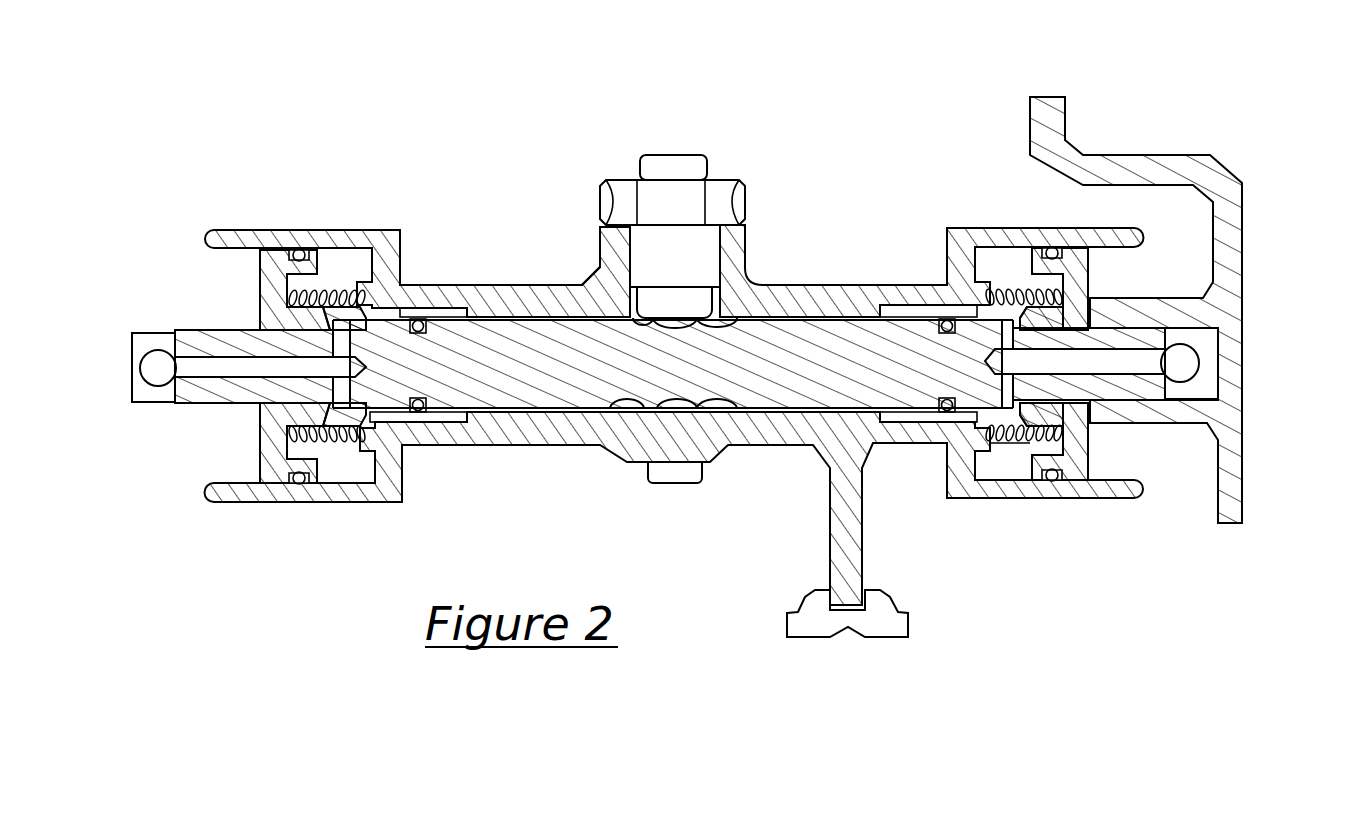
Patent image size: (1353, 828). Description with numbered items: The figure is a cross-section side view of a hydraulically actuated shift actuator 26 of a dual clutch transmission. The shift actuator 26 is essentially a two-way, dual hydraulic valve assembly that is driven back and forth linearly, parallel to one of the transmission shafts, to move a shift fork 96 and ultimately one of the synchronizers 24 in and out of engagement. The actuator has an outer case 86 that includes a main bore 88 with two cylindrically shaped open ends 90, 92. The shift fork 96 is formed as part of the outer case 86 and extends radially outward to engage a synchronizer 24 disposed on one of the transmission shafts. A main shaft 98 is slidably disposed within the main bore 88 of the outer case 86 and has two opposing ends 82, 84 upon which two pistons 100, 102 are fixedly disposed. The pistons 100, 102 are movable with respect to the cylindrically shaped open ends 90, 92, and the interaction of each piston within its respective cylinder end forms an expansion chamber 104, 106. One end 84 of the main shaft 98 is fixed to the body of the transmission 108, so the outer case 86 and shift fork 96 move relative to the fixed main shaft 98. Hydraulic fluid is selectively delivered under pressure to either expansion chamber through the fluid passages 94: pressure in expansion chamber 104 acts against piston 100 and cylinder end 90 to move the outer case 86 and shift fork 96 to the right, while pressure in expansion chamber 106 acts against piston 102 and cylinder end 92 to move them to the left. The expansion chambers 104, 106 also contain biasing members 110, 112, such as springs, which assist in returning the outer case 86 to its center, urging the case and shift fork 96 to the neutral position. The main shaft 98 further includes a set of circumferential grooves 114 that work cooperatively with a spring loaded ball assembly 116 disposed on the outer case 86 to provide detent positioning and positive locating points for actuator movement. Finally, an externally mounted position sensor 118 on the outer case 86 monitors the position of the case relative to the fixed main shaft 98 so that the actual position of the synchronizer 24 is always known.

The synchronizer 24 is at (897, 616).
The shift actuator 26 is at (486, 209).
The end of main shaft 82 is at (247, 398).
The end of main shaft 84 is at (1133, 392).
The outer case 86 is at (578, 445).
The main bore 88 is at (774, 409).
The cylindrically shaped open end 90 is at (247, 483).
The cylindrically shaped open end 92 is at (1138, 468).
The fluid passages 94 is at (157, 370).
The shift fork 96 is at (862, 539).
The main shaft 98 is at (825, 332).
The piston 100 is at (268, 287).
The piston 102 is at (1082, 271).
The expansion chamber 104 is at (337, 470).
The expansion chamber 106 is at (1007, 473).
The body of the transmission 108 is at (1042, 143).
The biasing member 110 is at (345, 453).
The biasing member 112 is at (1063, 446).
The circumferential grooves 114 is at (618, 273).
The spring loaded ball assembly 116 is at (705, 248).
The position sensor 118 is at (665, 479).